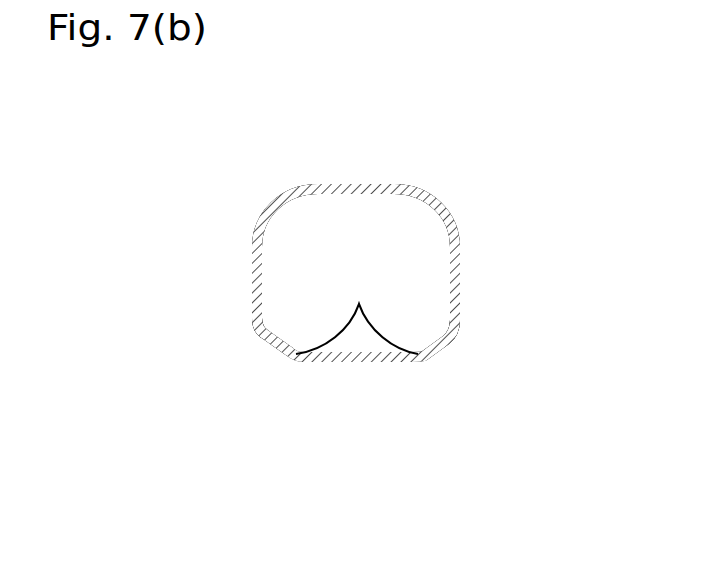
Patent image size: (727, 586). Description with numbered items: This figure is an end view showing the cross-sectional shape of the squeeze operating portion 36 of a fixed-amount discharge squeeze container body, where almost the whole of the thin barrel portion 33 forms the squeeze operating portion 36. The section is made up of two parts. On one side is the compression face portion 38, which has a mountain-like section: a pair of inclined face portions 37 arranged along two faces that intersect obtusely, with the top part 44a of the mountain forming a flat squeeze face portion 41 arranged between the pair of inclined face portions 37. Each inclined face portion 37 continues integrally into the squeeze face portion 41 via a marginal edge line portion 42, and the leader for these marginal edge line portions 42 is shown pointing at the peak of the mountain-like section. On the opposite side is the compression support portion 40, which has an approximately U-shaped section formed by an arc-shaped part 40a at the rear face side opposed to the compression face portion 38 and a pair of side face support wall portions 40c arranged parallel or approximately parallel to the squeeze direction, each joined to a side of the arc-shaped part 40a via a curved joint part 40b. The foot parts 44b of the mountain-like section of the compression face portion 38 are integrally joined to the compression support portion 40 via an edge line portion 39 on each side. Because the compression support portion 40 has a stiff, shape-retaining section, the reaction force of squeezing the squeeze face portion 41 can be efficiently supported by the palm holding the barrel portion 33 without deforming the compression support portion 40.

The barrel portion 33 is at (252, 263).
The squeeze operating portion 36 is at (462, 262).
The inclined face portions 37 is at (276, 346).
The compression face portion 38 is at (392, 362).
The edge line portion 39 is at (252, 333).
The compression support portion 40 is at (448, 207).
The arc-shaped part 40a is at (333, 183).
The curved joint part 40b is at (263, 208).
The side face support wall portions 40c is at (252, 297).
The squeeze face portion 41 is at (328, 363).
The marginal edge line portion 42 is at (360, 305).
The top part 44a is at (343, 417).
The foot parts 44b is at (368, 366).